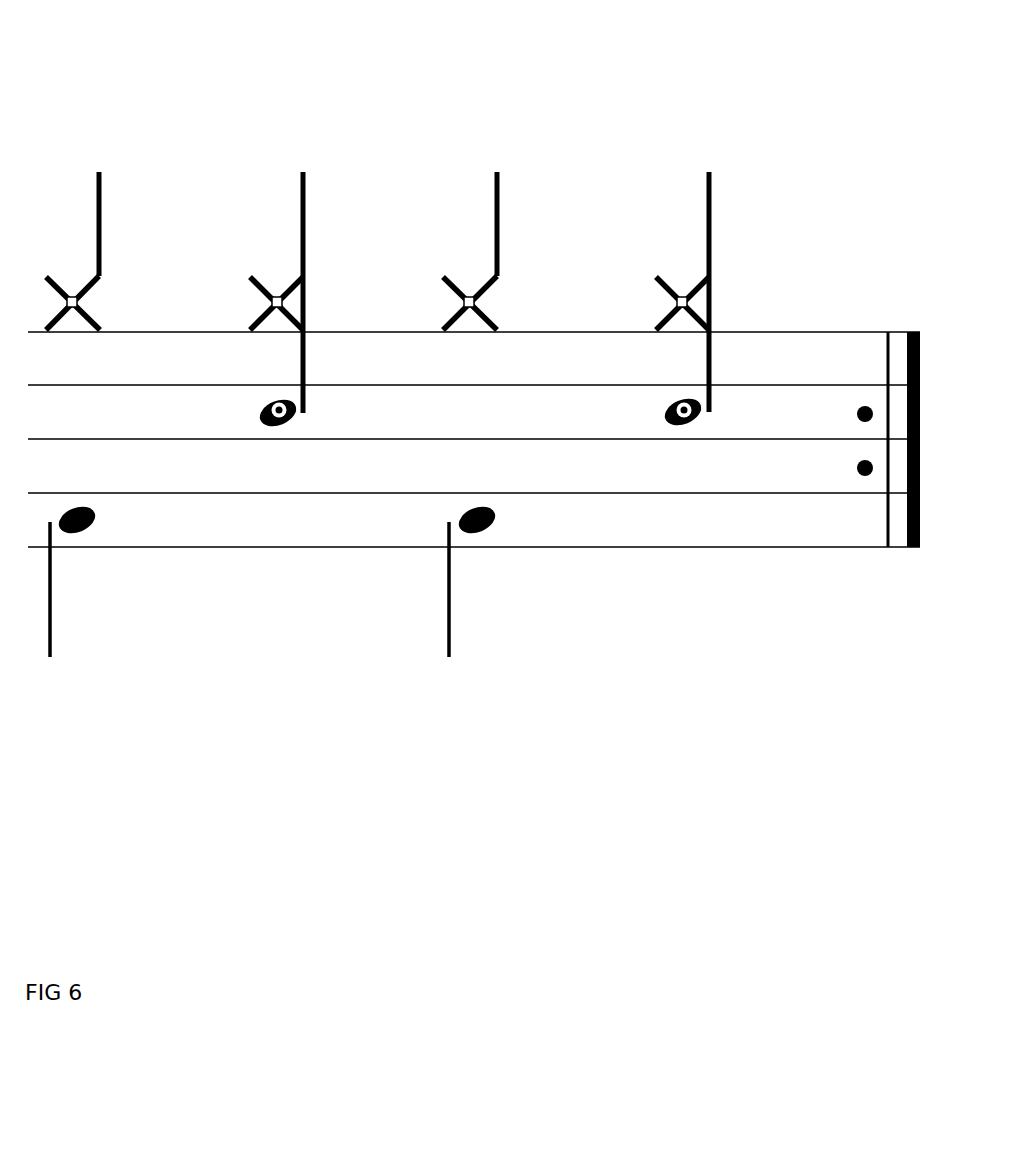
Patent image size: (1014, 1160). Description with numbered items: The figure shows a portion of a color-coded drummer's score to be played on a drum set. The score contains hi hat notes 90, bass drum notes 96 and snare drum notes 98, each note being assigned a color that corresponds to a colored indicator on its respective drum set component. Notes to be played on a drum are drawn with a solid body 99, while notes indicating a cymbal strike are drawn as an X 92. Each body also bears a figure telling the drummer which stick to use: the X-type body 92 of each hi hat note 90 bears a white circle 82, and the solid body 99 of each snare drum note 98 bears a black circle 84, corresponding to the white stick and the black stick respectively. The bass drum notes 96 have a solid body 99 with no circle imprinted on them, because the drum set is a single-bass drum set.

The hi hat note 90 is at (102, 183).
The X 92 is at (253, 293).
The white circle 82 is at (72, 312).
The snare drum note 98 is at (308, 363).
The black circle 84 is at (247, 418).
The solid body 99 is at (106, 523).
The bass drum note 96 is at (52, 617).